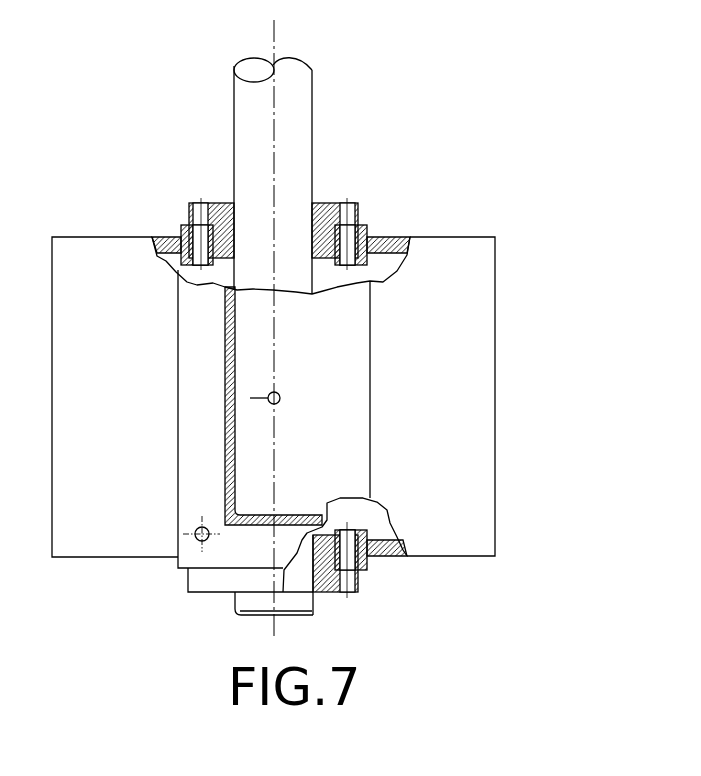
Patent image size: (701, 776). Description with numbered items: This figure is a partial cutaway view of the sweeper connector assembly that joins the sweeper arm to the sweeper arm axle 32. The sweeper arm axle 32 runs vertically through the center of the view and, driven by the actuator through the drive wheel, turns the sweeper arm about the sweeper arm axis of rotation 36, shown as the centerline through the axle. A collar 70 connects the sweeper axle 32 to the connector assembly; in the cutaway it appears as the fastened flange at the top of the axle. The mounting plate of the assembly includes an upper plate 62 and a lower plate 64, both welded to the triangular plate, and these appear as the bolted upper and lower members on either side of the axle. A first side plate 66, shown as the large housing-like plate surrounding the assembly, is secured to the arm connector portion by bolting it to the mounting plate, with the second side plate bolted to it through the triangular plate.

The sweeper arm axle 32 is at (312, 153).
The sweeper arm axis of rotation 36 is at (274, 35).
The upper plate 62 is at (160, 237).
The lower plate 64 is at (390, 555).
The first side plate 66 is at (340, 380).
The collar 70 is at (328, 203).